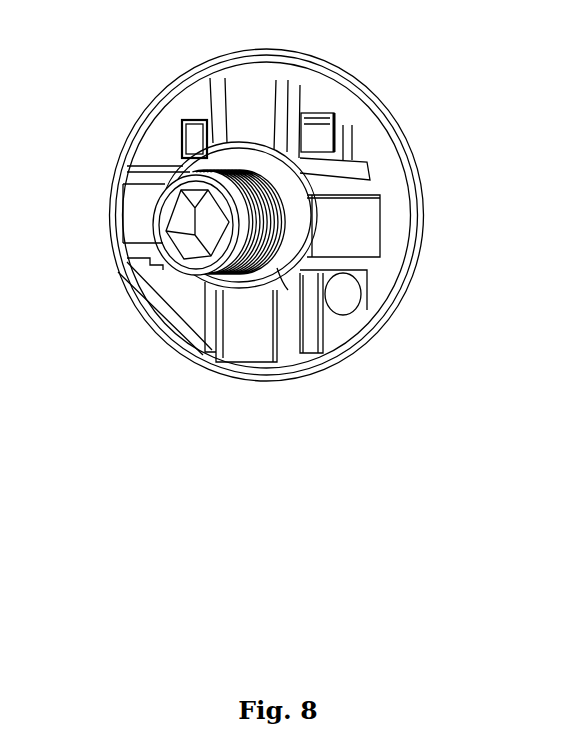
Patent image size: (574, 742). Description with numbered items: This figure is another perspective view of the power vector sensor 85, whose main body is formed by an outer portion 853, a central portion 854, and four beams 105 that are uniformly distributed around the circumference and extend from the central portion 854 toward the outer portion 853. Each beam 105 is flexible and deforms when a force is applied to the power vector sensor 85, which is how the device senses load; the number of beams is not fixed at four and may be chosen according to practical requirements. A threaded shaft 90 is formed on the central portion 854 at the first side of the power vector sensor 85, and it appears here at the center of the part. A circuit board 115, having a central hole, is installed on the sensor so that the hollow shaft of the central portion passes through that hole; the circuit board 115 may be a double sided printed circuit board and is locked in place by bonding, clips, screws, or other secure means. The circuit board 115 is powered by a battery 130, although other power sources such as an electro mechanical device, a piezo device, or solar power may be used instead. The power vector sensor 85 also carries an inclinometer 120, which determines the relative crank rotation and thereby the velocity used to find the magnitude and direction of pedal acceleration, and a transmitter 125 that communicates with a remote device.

The power vector sensor 85 is at (400, 155).
The threaded shaft 90 is at (262, 236).
The beams 105 is at (253, 92).
The circuit board 115 is at (188, 293).
The inclinometer 120 is at (322, 138).
The transmitter 125 is at (188, 140).
The battery 130 is at (345, 302).
The outer portion 853 is at (392, 222).
The central portion 854 is at (283, 264).